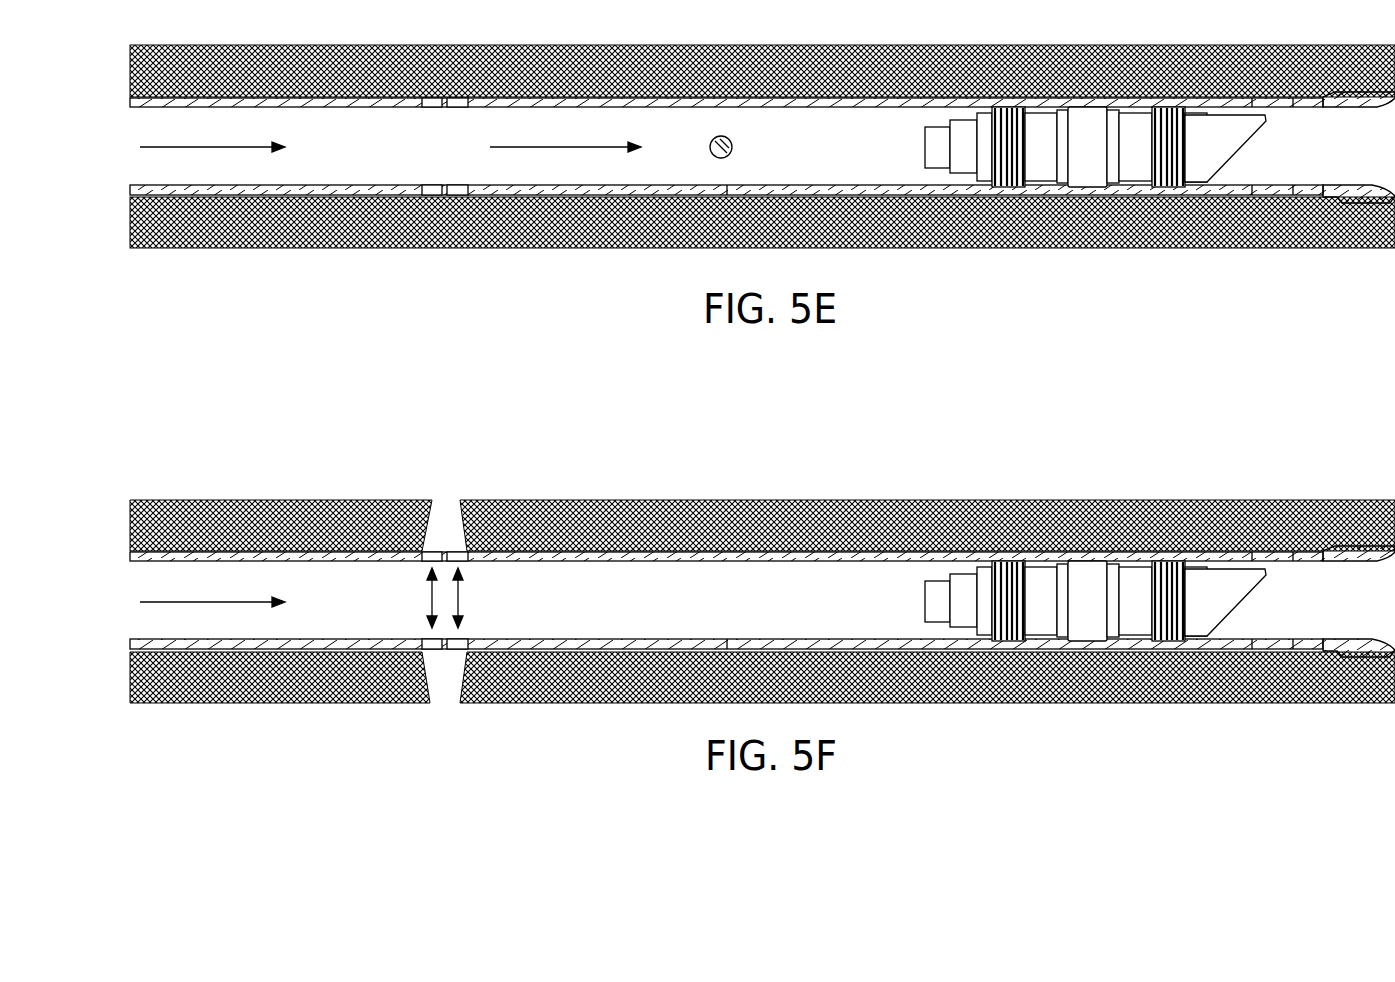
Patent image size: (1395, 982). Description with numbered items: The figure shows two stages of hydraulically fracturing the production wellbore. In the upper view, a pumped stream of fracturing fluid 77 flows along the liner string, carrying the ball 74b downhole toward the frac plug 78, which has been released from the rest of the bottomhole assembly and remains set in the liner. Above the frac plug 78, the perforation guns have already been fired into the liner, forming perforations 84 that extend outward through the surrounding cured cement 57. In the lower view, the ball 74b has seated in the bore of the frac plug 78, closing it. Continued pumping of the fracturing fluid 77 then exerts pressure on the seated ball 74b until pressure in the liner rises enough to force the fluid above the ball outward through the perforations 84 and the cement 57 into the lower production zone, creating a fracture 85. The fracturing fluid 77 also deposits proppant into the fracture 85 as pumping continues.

In FIG. 5E, the cement 57 is at (352, 198).
In FIG. 5F, the cement 57 is at (347, 548).
In FIG. 5E, the fracturing fluid 77 is at (216, 148).
In FIG. 5F, the fracturing fluid 77 is at (205, 601).
In FIG. 5E, the perforations 84 is at (458, 195).
In FIG. 5F, the fracture 85 is at (448, 517).
In FIG. 5E, the ball 74b is at (721, 158).
In FIG. 5E, the frac plug 78 is at (1087, 162).
In FIG. 5F, the frac plug 78 is at (1090, 566).